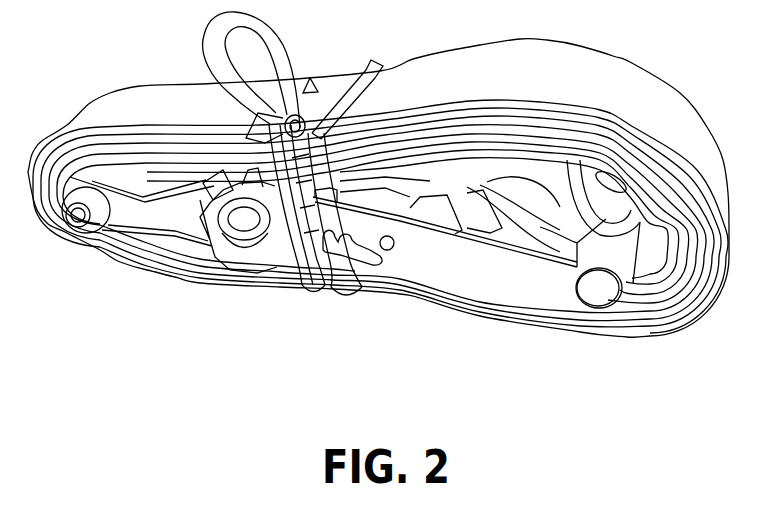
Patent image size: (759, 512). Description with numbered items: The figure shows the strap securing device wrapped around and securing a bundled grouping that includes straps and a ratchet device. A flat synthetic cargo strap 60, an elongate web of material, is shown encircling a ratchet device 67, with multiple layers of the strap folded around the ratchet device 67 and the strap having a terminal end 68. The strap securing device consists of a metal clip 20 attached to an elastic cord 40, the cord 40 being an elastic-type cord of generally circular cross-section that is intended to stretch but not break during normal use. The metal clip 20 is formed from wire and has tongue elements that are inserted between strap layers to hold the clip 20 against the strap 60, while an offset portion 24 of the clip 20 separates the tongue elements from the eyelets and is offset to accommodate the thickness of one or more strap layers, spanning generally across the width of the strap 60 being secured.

The metal clip 20 is at (378, 118).
The offset portion 24 is at (331, 96).
The elastic cord 40 is at (340, 284).
The strap 60 is at (613, 335).
The ratchet device 67 is at (551, 292).
The terminal end 68 is at (297, 281).